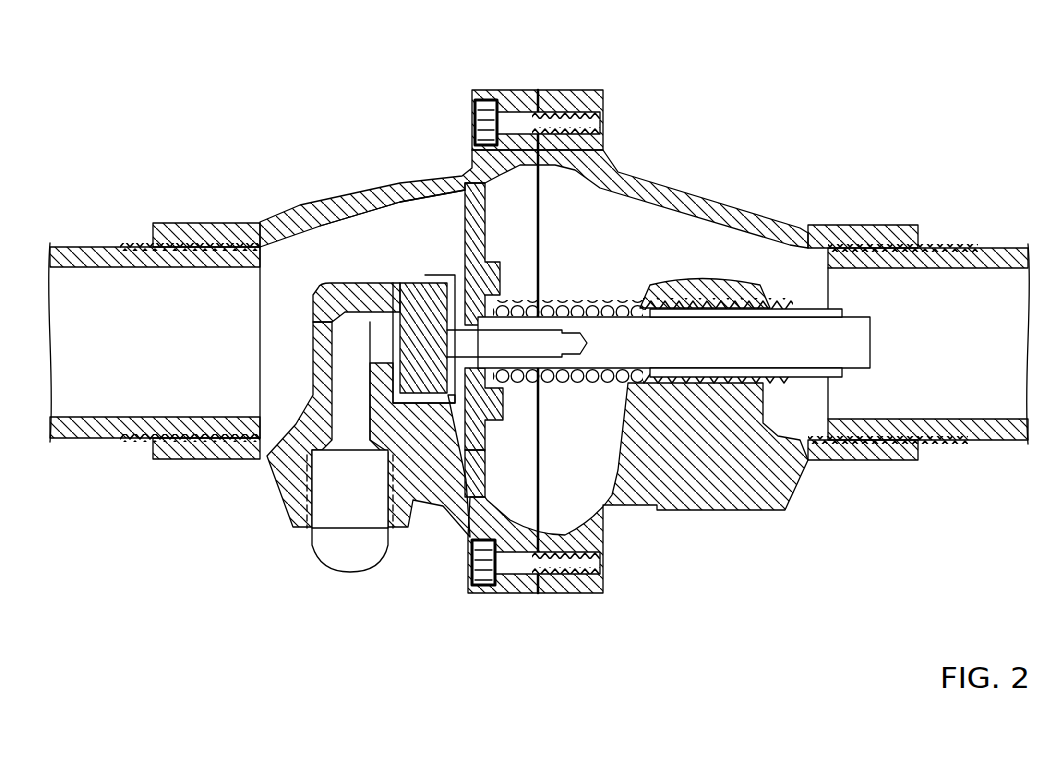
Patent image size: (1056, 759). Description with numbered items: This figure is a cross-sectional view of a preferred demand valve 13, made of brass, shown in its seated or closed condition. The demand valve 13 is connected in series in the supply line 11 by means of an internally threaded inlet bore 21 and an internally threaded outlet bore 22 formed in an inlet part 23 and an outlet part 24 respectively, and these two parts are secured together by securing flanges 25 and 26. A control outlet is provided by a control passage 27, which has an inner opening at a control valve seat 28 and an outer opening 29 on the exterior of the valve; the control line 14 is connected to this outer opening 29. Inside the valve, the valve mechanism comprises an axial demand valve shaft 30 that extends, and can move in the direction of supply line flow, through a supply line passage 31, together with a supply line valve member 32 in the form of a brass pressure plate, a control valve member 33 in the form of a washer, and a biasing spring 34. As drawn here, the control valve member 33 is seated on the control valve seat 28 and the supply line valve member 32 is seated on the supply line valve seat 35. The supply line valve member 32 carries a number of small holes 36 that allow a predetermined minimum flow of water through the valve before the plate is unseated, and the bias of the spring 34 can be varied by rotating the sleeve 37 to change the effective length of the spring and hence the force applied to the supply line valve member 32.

The supply line 11 is at (86, 246).
The demand valve 13 is at (706, 136).
The control line 14 is at (320, 556).
The internally threaded inlet bore 21 is at (178, 222).
The internally threaded outlet bore 22 is at (872, 460).
The inlet part 23 is at (272, 216).
The outlet part 24 is at (726, 506).
The securing flange 25 is at (483, 97).
The securing flange 26 is at (566, 106).
The control passage 27 is at (350, 408).
The control valve seat 28 is at (376, 326).
The outer opening 29 is at (360, 508).
The axial demand valve shaft 30 is at (650, 332).
The supply line passage 31 is at (584, 266).
The supply line valve member 32 is at (503, 470).
The control valve member 33 is at (410, 348).
The biasing spring 34 is at (605, 299).
The supply line valve seat 35 is at (470, 188).
The small holes 36 is at (487, 232).
The sleeve 37 is at (715, 292).